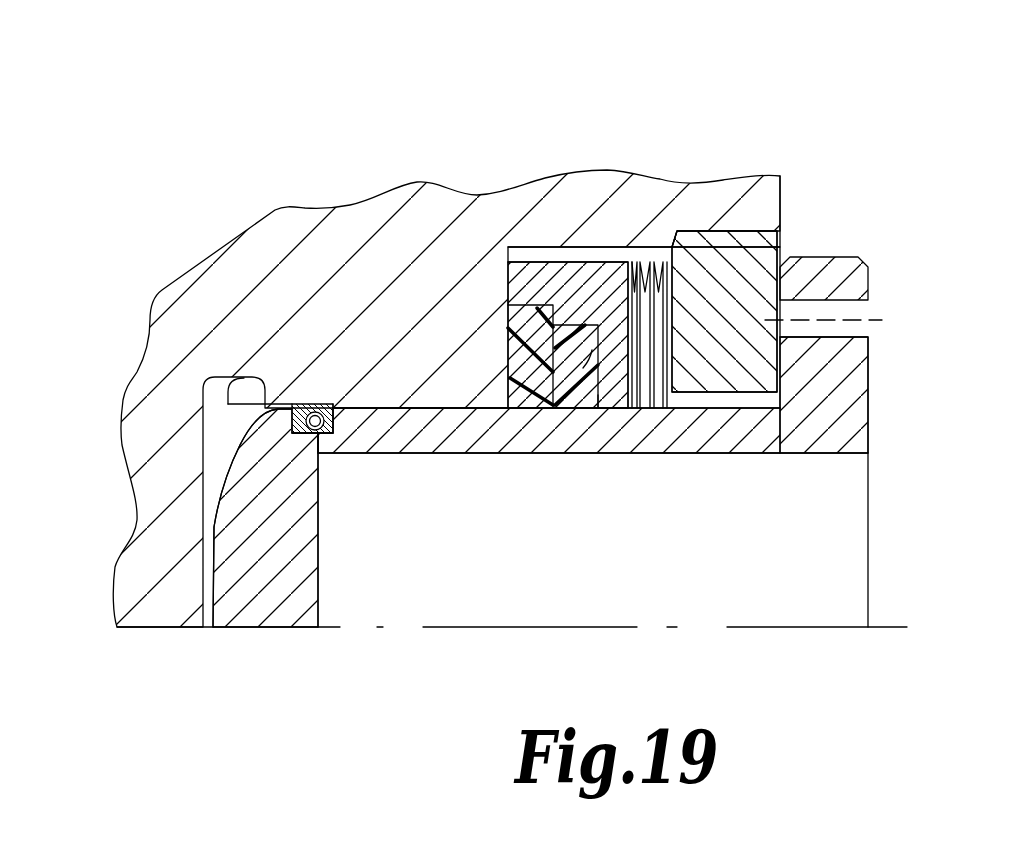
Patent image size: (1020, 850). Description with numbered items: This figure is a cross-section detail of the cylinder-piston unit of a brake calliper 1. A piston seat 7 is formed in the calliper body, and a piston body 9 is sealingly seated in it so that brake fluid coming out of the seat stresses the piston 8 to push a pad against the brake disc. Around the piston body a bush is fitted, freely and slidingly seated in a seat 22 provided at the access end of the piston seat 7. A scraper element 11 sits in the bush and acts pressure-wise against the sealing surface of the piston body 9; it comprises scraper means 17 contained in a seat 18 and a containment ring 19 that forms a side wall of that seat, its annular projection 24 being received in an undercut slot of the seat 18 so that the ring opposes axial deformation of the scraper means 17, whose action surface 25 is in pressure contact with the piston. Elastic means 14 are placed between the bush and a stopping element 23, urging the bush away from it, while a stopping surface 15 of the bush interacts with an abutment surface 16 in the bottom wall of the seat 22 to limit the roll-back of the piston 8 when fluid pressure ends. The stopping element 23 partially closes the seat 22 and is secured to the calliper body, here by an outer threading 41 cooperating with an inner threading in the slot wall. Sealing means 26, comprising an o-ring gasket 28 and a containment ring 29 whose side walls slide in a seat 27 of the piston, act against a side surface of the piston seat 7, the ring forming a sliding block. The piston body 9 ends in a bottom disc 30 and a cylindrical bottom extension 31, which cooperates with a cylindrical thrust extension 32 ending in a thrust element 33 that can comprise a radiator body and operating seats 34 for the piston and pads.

The brake calliper 1 is at (734, 110).
The piston seat 7 is at (214, 478).
The piston 8 is at (810, 204).
The piston body 9 is at (523, 437).
The scraper element 11 is at (586, 352).
The elastic means 14 is at (663, 262).
The stopping surface 15 is at (503, 367).
The abutment surface 16 is at (537, 308).
The scraper means 17 is at (569, 365).
The seat 18 is at (590, 352).
The containment ring 19 is at (530, 385).
The seat 22 is at (541, 266).
The stopping element 23 is at (740, 292).
The annular projection 24 is at (512, 273).
The action surface 25 is at (588, 412).
The sealing means 26 is at (324, 437).
The seat 27 is at (303, 436).
The o-ring gasket 28 is at (315, 435).
The containment ring 29 is at (316, 404).
The bottom disc 30 is at (300, 593).
The cylindrical bottom extension 31 is at (387, 430).
The cylindrical thrust extension 32 is at (790, 420).
The thrust element 33 is at (833, 277).
The operating seats 34 is at (858, 328).
The outer threading 41 is at (738, 237).